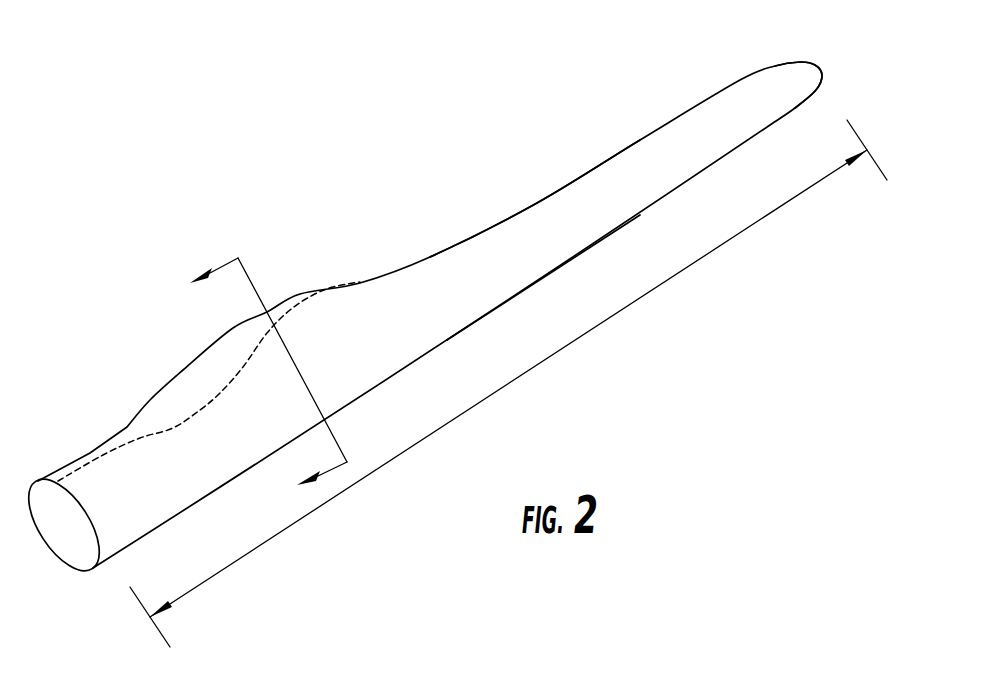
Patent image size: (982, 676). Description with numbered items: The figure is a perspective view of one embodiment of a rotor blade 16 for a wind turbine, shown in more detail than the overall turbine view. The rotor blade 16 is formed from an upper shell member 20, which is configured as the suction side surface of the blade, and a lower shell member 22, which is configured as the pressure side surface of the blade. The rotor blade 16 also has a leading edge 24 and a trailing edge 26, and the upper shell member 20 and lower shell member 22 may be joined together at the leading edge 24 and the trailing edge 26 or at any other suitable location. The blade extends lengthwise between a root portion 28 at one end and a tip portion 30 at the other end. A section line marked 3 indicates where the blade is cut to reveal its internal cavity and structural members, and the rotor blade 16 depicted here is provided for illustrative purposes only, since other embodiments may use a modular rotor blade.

The rotor blade 16 is at (388, 191).
The upper shell member 20 is at (220, 397).
The lower shell member 22 is at (337, 370).
The leading edge 24 is at (543, 280).
The trailing edge 26 is at (537, 203).
The root portion 28 is at (113, 472).
The tip portion 30 is at (760, 100).
The section line 3- 3 is at (259, 384).